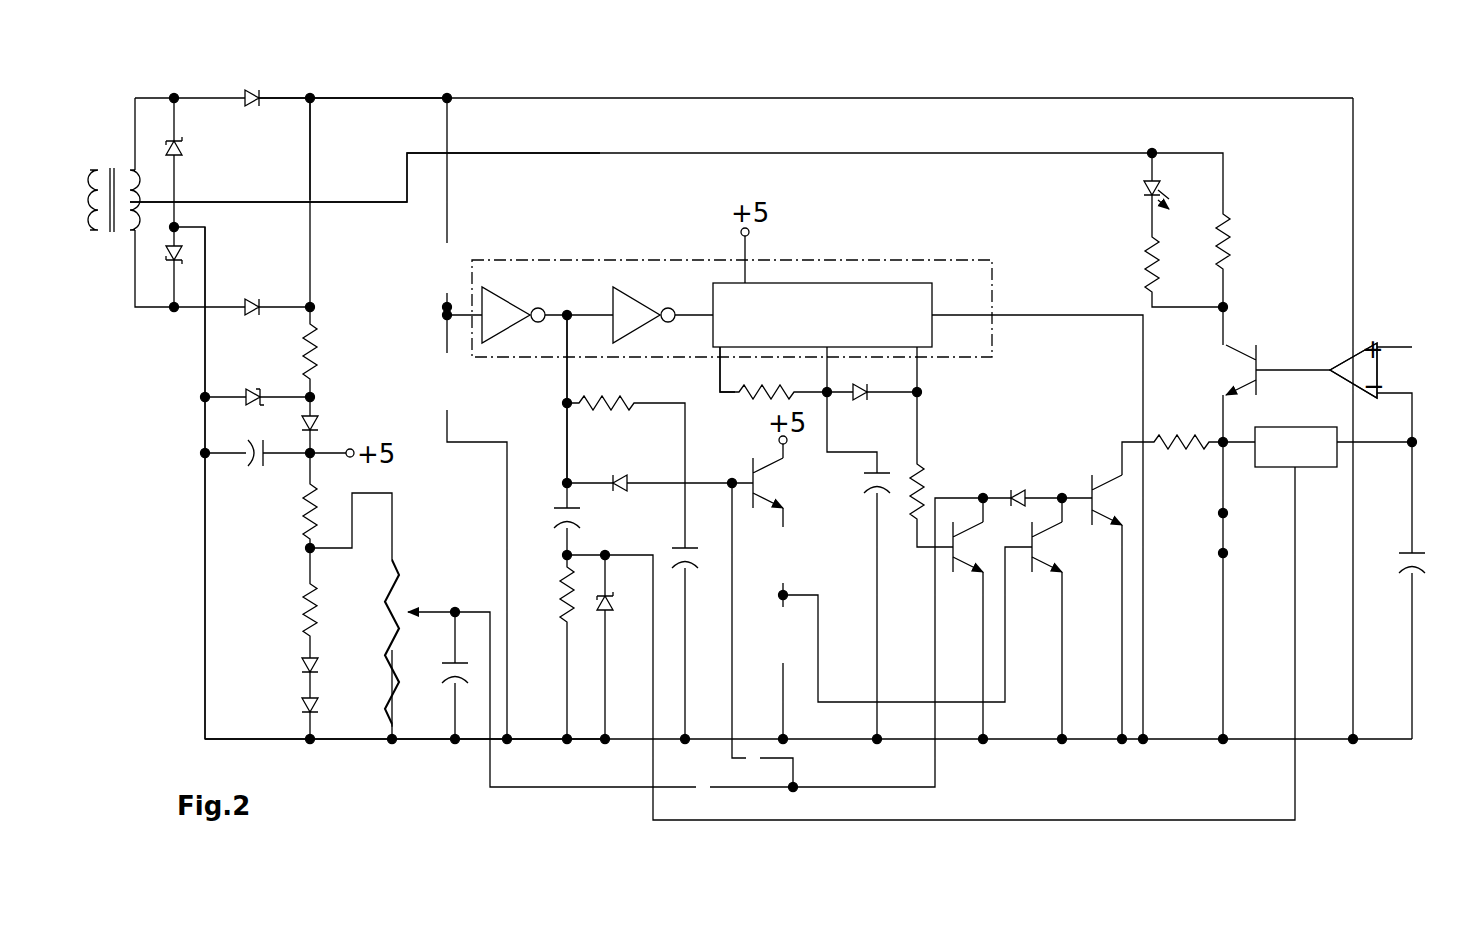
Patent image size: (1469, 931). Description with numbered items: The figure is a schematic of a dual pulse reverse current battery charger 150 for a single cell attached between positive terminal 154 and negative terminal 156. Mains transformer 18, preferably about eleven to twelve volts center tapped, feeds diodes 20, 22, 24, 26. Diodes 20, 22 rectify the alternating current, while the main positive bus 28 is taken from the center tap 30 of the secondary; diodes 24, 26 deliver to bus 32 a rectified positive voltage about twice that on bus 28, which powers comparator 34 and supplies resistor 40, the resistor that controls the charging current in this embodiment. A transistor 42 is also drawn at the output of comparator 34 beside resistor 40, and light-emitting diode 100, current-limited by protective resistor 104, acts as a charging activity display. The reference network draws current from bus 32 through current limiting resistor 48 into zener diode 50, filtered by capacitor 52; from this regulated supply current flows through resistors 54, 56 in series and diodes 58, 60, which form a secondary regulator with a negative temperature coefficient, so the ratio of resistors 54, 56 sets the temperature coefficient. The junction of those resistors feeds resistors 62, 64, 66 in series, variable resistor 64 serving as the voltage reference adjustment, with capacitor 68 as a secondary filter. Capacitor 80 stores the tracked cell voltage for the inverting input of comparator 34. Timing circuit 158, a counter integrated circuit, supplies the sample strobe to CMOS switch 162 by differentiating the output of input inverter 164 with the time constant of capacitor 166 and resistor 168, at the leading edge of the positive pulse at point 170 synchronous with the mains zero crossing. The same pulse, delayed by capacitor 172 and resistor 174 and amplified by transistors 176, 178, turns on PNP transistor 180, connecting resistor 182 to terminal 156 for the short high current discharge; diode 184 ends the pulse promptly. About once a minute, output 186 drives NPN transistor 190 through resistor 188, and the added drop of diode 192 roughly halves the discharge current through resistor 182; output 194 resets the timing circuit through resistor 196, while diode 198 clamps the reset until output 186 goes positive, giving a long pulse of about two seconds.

The mains transformer 18 is at (112, 234).
The diode 20 is at (184, 150).
The diode 22 is at (165, 260).
The diode 24 is at (254, 108).
The diode 26 is at (249, 315).
The main positive bus 28 is at (350, 205).
The center tap 30 is at (205, 603).
The bus 32 is at (313, 96).
The comparator 34 is at (1343, 368).
The resistor 40 is at (1228, 252).
The transistor 42 is at (1247, 360).
The current limiting resistor 48 is at (318, 340).
The zener diode 50 is at (255, 405).
The capacitor 52 is at (250, 462).
The resistor 54 is at (308, 500).
The resistor 56 is at (305, 605).
The diode 58 is at (303, 665).
The diode 60 is at (302, 705).
The resistor 62 is at (398, 533).
The variable resistor 64 is at (388, 592).
The resistor 66 is at (385, 675).
The capacitor 68 is at (455, 683).
The capacitor 80 is at (1404, 552).
The light-emitting diode 100 is at (1145, 197).
The protective resistor 104 is at (1148, 263).
The battery charger 150 is at (678, 86).
The positive terminal 154 is at (1220, 516).
The negative terminal 156 is at (1221, 553).
The timing circuit 158 is at (798, 258).
The CMOS switch 162 is at (1300, 466).
The input inverter 164 is at (496, 298).
The capacitor 166 is at (555, 528).
The resistor 168 is at (565, 618).
The point 170 is at (567, 372).
The capacitor 172 is at (685, 565).
The resistor 174 is at (620, 412).
The transistor 176 is at (765, 500).
The transistor 178 is at (1042, 562).
The PNP transistor 180 is at (1100, 484).
The resistor 182 is at (1183, 437).
The diode 184 is at (620, 493).
The output 186 is at (925, 396).
The resistor 188 is at (923, 492).
The NPN transistor 190 is at (968, 572).
The diode 192 is at (1022, 491).
The output 194 is at (720, 390).
The resistor 196 is at (766, 403).
The diode 198 is at (851, 405).